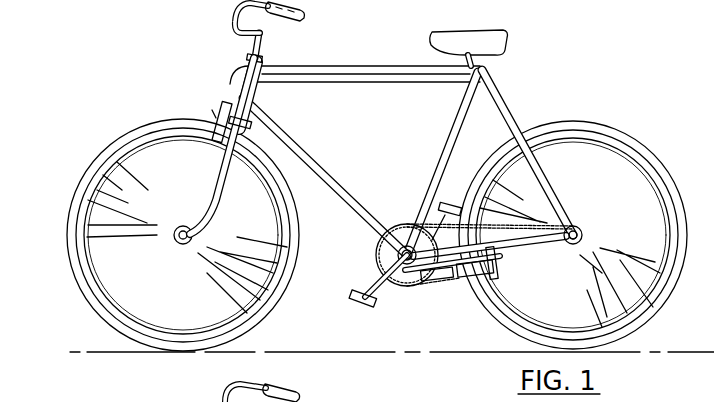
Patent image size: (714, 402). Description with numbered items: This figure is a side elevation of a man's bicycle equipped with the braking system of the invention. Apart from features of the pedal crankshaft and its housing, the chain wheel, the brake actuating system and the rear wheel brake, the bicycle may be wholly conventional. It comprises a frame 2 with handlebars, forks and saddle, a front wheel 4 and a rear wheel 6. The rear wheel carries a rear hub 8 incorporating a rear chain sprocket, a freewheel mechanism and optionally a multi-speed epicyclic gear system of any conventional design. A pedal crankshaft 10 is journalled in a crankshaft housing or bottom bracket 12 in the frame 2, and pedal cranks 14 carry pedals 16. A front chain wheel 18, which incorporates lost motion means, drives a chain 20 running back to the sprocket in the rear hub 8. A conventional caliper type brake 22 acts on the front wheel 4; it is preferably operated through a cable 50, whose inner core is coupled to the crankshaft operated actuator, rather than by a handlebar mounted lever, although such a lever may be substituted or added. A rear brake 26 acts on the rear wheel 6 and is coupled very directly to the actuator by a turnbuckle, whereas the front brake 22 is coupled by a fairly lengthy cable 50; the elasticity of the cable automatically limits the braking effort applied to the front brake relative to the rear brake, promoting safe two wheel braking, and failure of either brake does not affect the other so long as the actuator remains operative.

The frame 2 is at (312, 165).
The front wheel 4 is at (283, 312).
The rear wheel 6 is at (628, 128).
The rear hub 8 is at (580, 228).
The pedal crankshaft 10 is at (424, 163).
The crankshaft housing or bottom bracket 12 is at (373, 255).
The pedal cranks 14 is at (380, 290).
The pedals 16 is at (452, 205).
The front chain wheel 18 is at (420, 282).
The chain 20 is at (450, 282).
The caliper type brake 22 is at (222, 110).
The rear brake 26 is at (503, 282).
The cable 50 is at (405, 84).